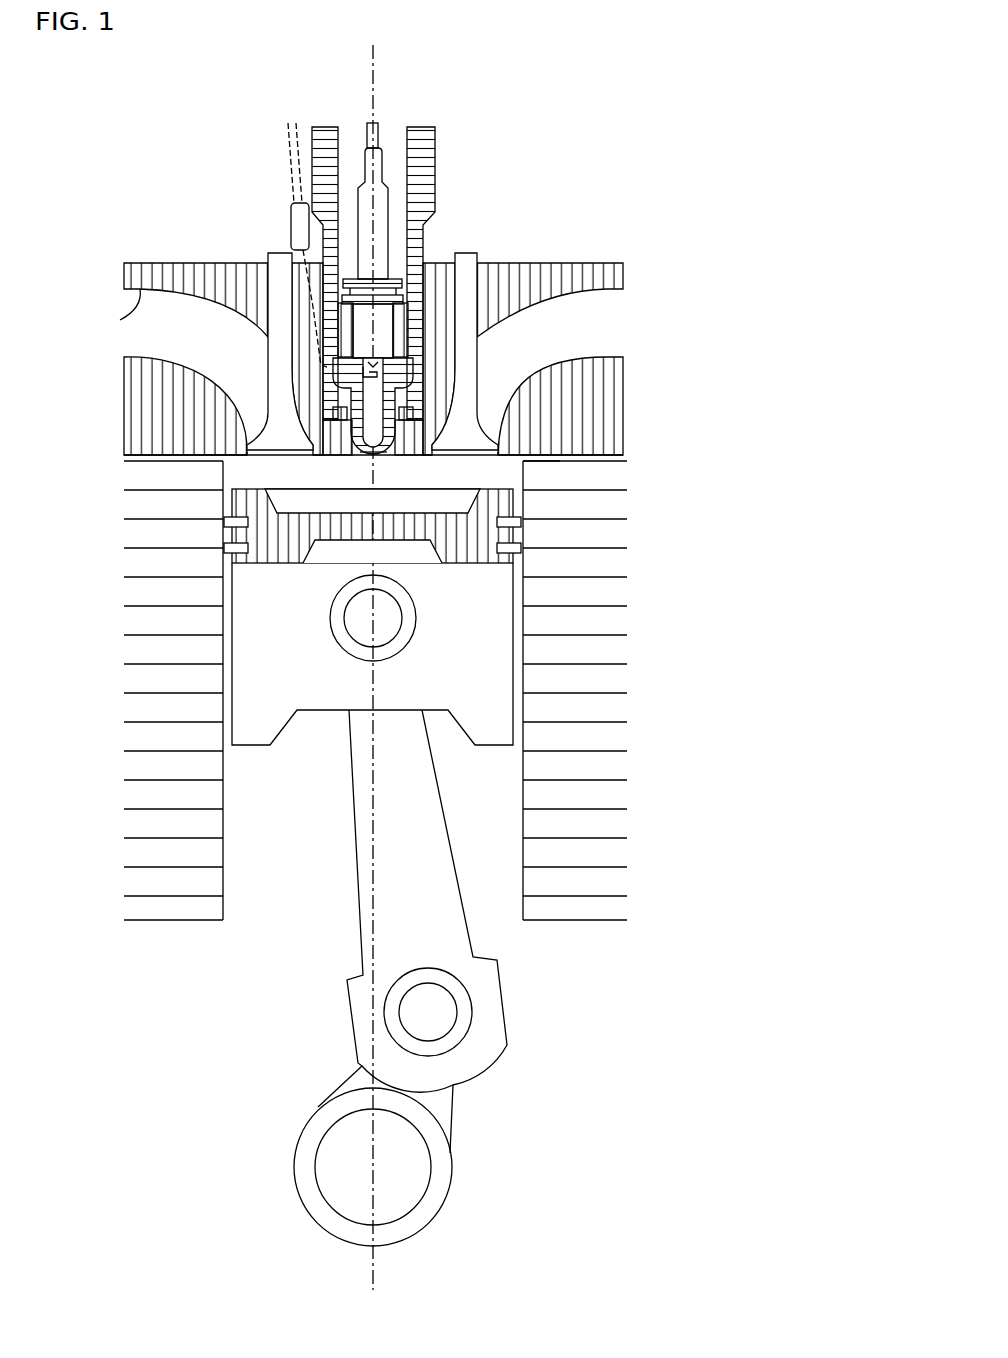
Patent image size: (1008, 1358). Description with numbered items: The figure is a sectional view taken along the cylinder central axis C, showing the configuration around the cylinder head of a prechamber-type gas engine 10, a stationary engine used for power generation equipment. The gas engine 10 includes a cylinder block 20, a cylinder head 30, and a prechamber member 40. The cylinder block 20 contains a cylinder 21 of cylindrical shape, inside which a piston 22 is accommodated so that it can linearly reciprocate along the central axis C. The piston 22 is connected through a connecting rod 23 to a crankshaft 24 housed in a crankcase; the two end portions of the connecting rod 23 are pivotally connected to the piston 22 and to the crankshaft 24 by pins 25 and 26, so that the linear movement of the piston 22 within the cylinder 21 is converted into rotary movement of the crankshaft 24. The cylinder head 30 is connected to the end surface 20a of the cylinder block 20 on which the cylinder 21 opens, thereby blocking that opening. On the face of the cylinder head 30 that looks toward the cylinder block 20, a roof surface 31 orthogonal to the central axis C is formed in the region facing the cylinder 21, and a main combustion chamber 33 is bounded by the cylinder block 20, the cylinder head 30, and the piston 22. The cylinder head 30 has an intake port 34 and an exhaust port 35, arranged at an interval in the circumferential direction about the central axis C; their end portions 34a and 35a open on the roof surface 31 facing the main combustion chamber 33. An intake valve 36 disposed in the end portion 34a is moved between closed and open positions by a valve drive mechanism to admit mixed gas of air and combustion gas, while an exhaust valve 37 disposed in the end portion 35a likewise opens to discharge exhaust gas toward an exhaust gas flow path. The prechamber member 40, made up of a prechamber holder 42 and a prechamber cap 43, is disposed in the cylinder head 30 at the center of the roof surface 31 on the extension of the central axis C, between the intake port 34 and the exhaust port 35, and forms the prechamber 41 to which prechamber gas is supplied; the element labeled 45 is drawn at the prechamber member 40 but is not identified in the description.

The gas engine 10 is at (692, 135).
The cylinder block 20 is at (600, 928).
The end surface 20a is at (593, 453).
The cylinder 21 is at (224, 862).
The piston 22 is at (513, 660).
The connecting rod 23 is at (370, 838).
The crankshaft 24 is at (437, 1202).
The pin 25 is at (358, 630).
The pin 26 is at (443, 1022).
The cylinder head 30 is at (588, 260).
The roof surface 31 is at (503, 456).
The main combustion chamber 33 is at (257, 475).
The intake port 34 is at (137, 318).
The end portion of the intake port 34a is at (255, 433).
The exhaust port 35 is at (605, 292).
The end portion of the exhaust port 35a is at (493, 430).
The intake valve 36 is at (265, 430).
The exhaust valve 37 is at (478, 425).
The prechamber member 40 is at (440, 172).
The prechamber 41 is at (377, 413).
The prechamber holder 42 is at (322, 132).
The prechamber cap 43 is at (372, 458).
The fuel injector 45 is at (362, 207).
The central axis C is at (373, 1257).